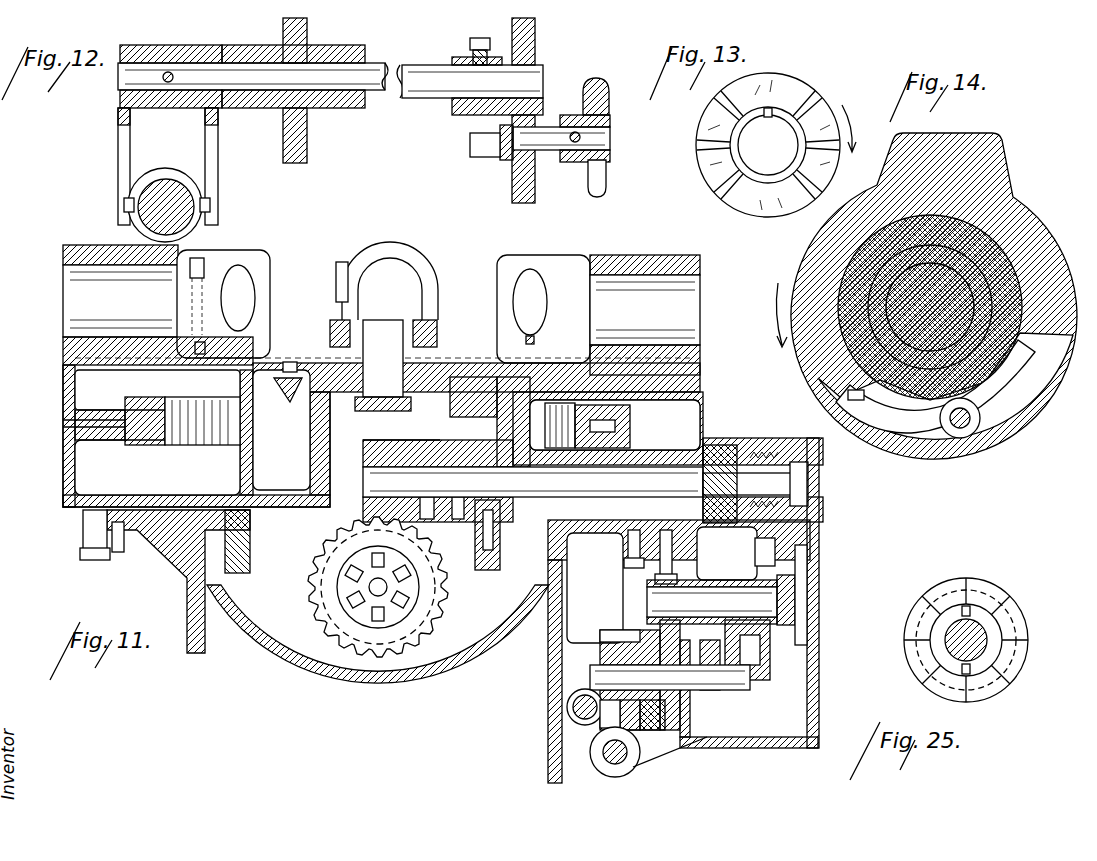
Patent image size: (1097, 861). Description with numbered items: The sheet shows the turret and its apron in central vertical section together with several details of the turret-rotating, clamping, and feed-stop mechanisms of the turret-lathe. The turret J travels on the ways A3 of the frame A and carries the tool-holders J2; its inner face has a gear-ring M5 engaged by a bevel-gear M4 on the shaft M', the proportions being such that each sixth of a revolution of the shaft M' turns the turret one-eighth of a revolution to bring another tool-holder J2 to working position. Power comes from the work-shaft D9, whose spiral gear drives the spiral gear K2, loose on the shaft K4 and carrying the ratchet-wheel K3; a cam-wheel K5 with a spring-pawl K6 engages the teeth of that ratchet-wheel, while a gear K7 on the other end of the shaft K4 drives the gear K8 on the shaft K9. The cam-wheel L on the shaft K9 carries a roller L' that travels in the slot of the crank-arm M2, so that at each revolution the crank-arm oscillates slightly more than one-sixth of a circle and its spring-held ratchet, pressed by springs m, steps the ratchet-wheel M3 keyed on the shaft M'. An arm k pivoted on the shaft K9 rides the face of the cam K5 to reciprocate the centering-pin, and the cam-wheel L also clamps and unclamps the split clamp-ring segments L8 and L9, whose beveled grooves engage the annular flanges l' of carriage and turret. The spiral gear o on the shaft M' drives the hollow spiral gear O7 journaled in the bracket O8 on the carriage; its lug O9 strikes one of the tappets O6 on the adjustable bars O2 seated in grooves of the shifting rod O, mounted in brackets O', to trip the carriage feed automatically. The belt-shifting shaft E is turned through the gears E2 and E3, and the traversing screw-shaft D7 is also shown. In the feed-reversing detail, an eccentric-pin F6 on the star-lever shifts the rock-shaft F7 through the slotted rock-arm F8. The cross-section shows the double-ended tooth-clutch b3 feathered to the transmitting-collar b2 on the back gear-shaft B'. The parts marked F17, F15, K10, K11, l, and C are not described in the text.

In FIG. 12, the rock-shaft F7 is at (330, 80).
In FIG. 12, the fork F17 is at (120, 157).
In FIG. 12, the eccentric-pin F6 is at (470, 138).
In FIG. 12, the slotted rock-arm F8 is at (485, 158).
In FIG. 12, the lever F15 is at (607, 90).
In FIG. 13, the ratchet-wheel M3 is at (712, 180).
In FIG. 11, the ratchet-wheel M3 is at (715, 452).
In FIG. 14, the ratchet-wheel K3 is at (1000, 195).
In FIG. 11, the ratchet-wheel K3 is at (610, 650).
In FIG. 14, the shaft K4 is at (1010, 385).
In FIG. 11, the shaft K4 is at (605, 675).
In FIG. 14, the friction ring K10 is at (850, 280).
In FIG. 11, the friction ring K10 is at (638, 735).
In FIG. 14, the cam-wheel K5 is at (795, 345).
In FIG. 11, the cam-wheel K5 is at (668, 728).
In FIG. 14, the spring-pawl K6 is at (940, 420).
In FIG. 11, the spring-pawl K6 is at (655, 735).
In FIG. 14, the key K11 is at (855, 392).
In FIG. 11, the springs m is at (765, 455).
In FIG. 25, the back gear-shaft B' is at (966, 635).
In FIG. 25, the transmitting-collar b2 is at (985, 620).
In FIG. 25, the double-ended tooth-clutch b3 is at (975, 580).
In FIG. 11, the tool-holder J2 is at (705, 298).
In FIG. 11, the turret J is at (265, 350).
In FIG. 11, the chamber l is at (381, 436).
In FIG. 11, the annular flanges l' is at (371, 448).
In FIG. 11, the clamp-ring segment L9 is at (150, 405).
In FIG. 11, the gear-ring M5 is at (288, 404).
In FIG. 11, the clamp-ring segment L8 is at (612, 420).
In FIG. 11, the spiral gear o is at (412, 445).
In FIG. 11, the shaft M' is at (581, 482).
In FIG. 11, the frame A is at (195, 650).
In FIG. 11, the ways A3 is at (135, 548).
In FIG. 11, the traversing screw-shaft D7 is at (610, 585).
In FIG. 11, the arm k is at (648, 585).
In FIG. 11, the gear K8 is at (725, 565).
In FIG. 11, the shaft K9 is at (772, 600).
In FIG. 11, the roller L' is at (813, 578).
In FIG. 11, the crank-arm M2 is at (808, 572).
In FIG. 11, the cam-wheel L is at (785, 650).
In FIG. 11, the gear K7 is at (730, 700).
In FIG. 11, the spiral gear K2 is at (603, 634).
In FIG. 11, the belt-shifting shaft E is at (568, 710).
In FIG. 11, the gear E3 is at (580, 722).
In FIG. 11, the gear E2 is at (605, 728).
In FIG. 11, the work-shaft D9 is at (608, 765).
In FIG. 11, the casing C is at (770, 748).
In FIG. 11, the bevel-gear M4 is at (490, 570).
In FIG. 11, the shifting rod O is at (359, 587).
In FIG. 11, the brackets O' is at (351, 595).
In FIG. 11, the rods or bars O2 is at (350, 580).
In FIG. 11, the tappet O6 is at (370, 548).
In FIG. 11, the lug O9 is at (372, 555).
In FIG. 11, the bracket O8 is at (300, 570).
In FIG. 11, the spiral gear O7 is at (422, 600).